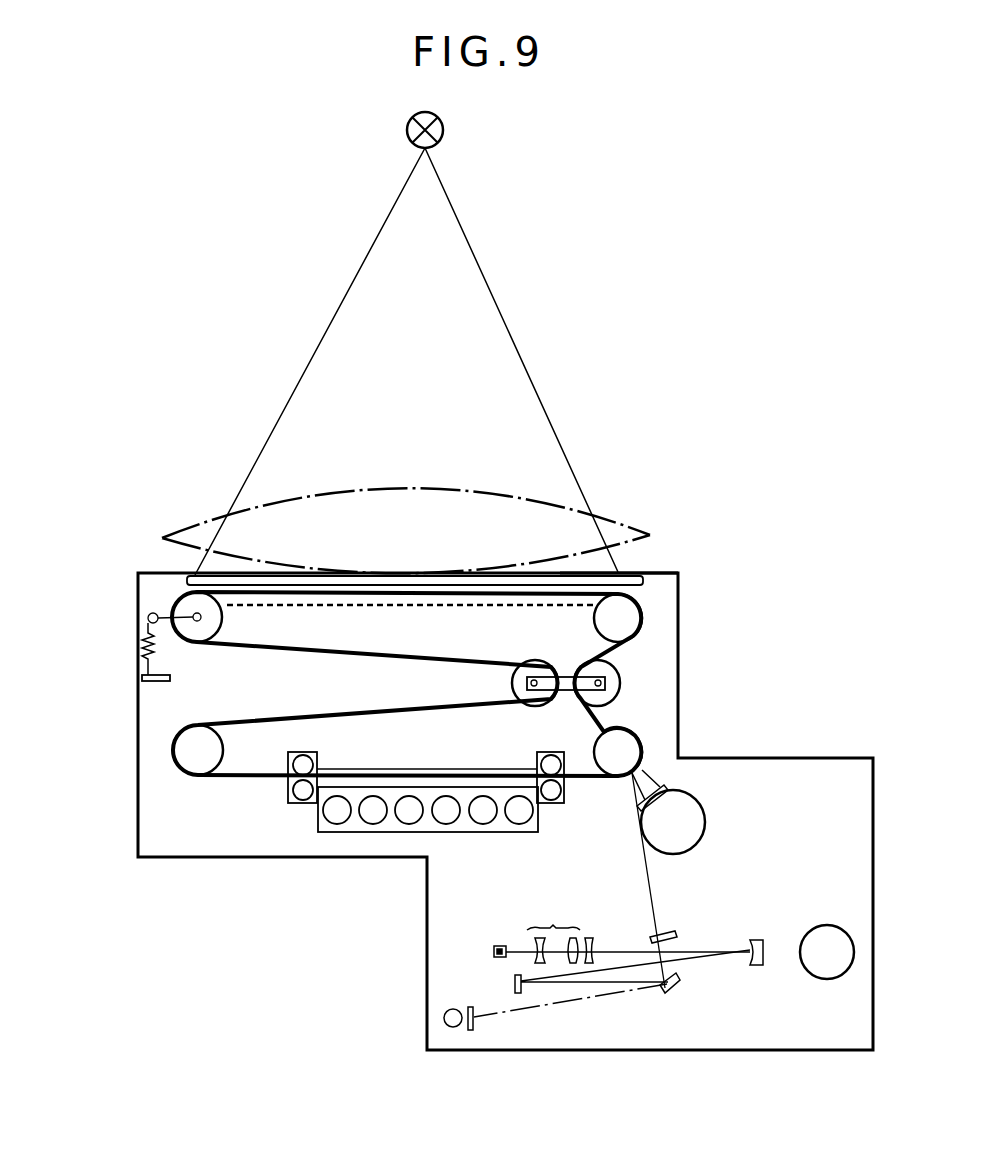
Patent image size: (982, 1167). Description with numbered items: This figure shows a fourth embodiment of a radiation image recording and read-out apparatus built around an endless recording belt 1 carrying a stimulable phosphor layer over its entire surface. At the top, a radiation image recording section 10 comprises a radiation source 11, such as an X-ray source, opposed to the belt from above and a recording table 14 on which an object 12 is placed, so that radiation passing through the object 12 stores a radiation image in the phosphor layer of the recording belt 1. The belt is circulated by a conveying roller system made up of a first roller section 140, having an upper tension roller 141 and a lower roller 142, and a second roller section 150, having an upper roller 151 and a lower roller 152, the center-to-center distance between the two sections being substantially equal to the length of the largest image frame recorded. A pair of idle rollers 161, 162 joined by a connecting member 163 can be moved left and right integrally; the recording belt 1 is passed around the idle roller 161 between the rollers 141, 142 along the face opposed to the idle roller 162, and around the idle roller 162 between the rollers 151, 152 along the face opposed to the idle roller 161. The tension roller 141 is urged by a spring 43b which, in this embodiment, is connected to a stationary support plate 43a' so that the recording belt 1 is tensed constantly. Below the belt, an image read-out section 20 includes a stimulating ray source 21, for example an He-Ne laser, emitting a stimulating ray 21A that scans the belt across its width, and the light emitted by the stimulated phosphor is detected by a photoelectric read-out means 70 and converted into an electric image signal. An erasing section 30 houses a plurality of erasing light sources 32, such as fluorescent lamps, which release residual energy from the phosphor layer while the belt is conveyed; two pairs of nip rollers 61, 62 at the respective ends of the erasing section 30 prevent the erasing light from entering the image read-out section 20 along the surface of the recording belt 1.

The recording belt 1 is at (326, 587).
The radiation image recording section 10 is at (586, 460).
The radiation source 11 is at (443, 130).
The object 12 is at (430, 490).
The recording table 14 is at (655, 570).
The image read-out section 20 is at (620, 797).
The stimulating ray source 21 is at (822, 925).
The stimulating ray 21A is at (657, 887).
The erasing section 30 is at (300, 818).
The erasing light sources 32 is at (374, 822).
The support plate 43a' is at (191, 676).
The spring 43b is at (143, 640).
The nip rollers 61 is at (298, 778).
The nip rollers 62 is at (560, 770).
The photoelectric read-out means 70 is at (714, 810).
The first roller section 140 is at (128, 683).
The tension roller 141 is at (192, 612).
The lower roller 142 is at (190, 752).
The second roller section 150 is at (648, 642).
The upper roller 151 is at (627, 618).
The lower roller 152 is at (630, 752).
The idle roller 161 is at (520, 687).
The idle roller 162 is at (616, 683).
The connecting member 163 is at (562, 675).